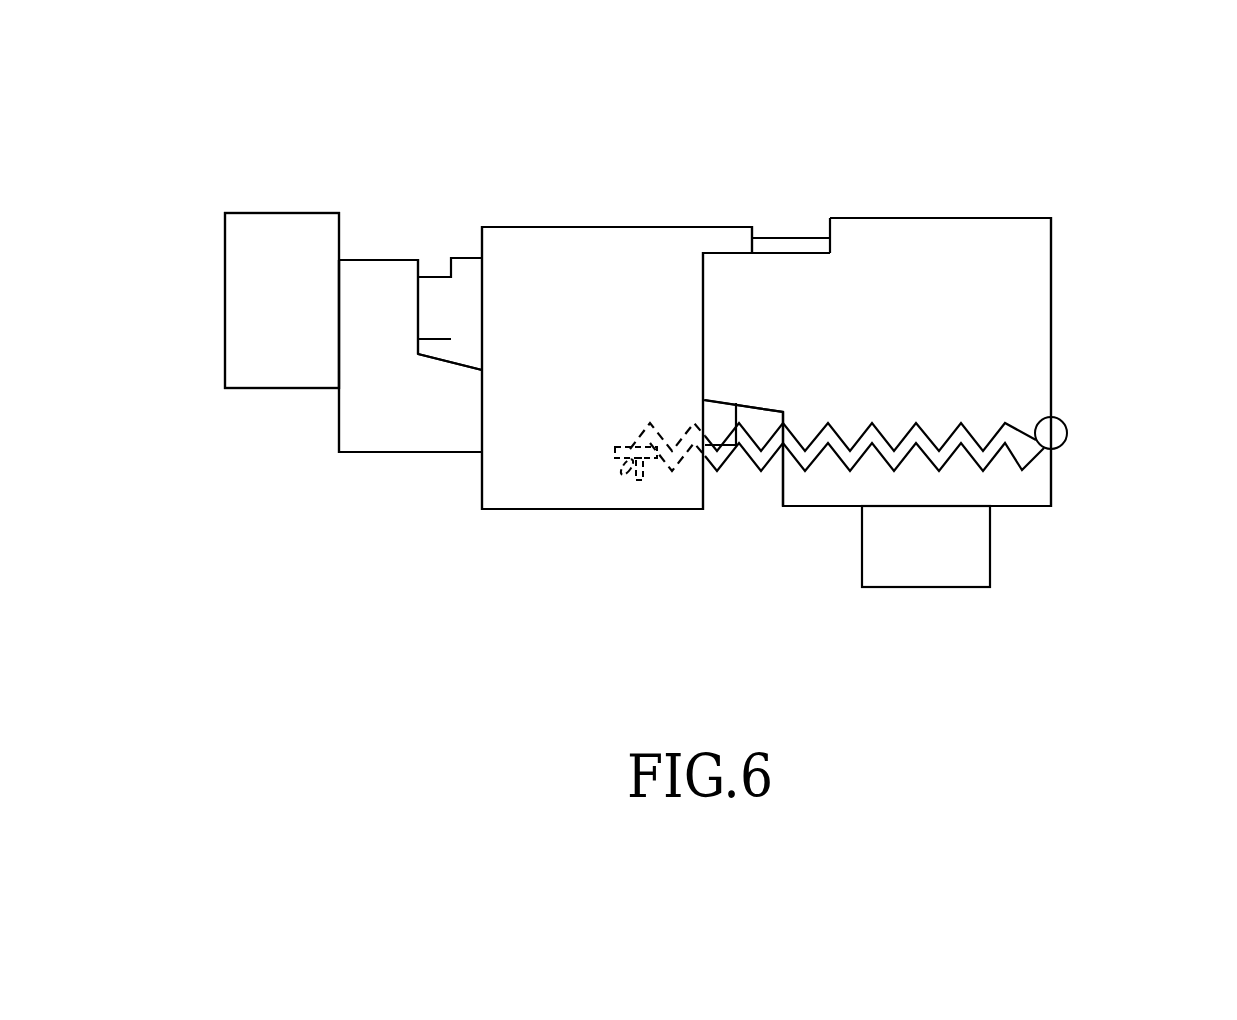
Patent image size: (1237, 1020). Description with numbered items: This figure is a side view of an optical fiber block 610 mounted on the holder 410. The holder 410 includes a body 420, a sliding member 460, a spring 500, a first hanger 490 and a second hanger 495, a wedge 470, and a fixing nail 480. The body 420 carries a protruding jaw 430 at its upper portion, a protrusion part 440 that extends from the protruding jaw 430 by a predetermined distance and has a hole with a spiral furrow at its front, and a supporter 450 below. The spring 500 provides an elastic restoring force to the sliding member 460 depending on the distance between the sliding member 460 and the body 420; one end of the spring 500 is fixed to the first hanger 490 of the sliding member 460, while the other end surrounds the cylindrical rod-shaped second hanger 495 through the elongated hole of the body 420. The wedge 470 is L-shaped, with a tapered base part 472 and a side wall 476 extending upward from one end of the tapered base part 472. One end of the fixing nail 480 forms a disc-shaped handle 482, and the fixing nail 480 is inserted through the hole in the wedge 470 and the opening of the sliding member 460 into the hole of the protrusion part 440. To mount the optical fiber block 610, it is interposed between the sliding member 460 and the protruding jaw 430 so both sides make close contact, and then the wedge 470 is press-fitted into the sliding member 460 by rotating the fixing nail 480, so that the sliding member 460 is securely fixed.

The holder 410 is at (545, 532).
The body 420 is at (1071, 311).
The protruding jaw 430 is at (942, 236).
The protrusion part 440 is at (749, 286).
The supporter 450 is at (926, 572).
The sliding member 460 is at (593, 257).
The wedge 470 is at (382, 472).
The tapered base part 472 is at (355, 420).
The side wall 476 is at (389, 277).
The fixing nail 480 is at (266, 193).
The disc-shaped handle 482 is at (290, 229).
The first hanger 490 is at (639, 481).
The second hanger 495 is at (1067, 432).
The spring 500 is at (1010, 425).
The optical fiber block 610 is at (788, 238).